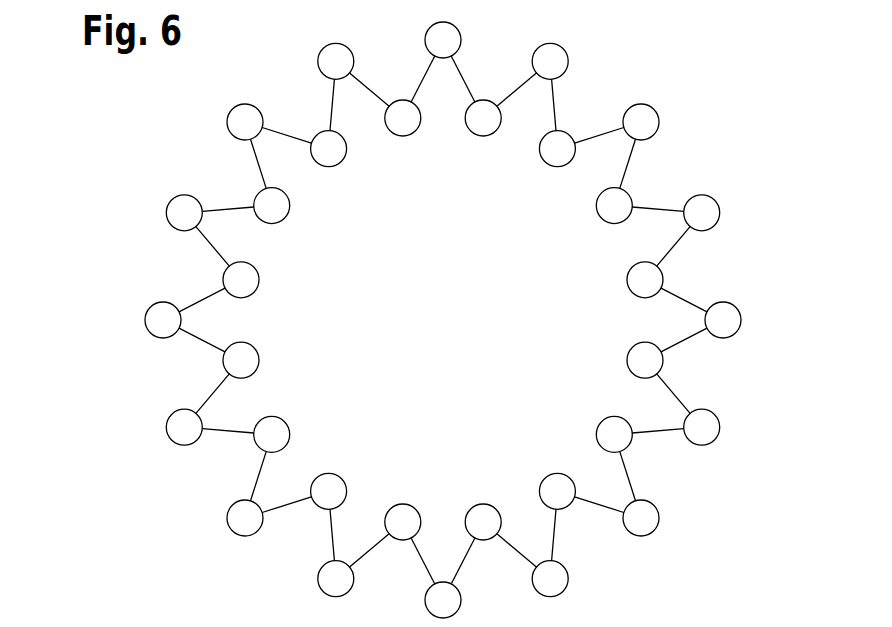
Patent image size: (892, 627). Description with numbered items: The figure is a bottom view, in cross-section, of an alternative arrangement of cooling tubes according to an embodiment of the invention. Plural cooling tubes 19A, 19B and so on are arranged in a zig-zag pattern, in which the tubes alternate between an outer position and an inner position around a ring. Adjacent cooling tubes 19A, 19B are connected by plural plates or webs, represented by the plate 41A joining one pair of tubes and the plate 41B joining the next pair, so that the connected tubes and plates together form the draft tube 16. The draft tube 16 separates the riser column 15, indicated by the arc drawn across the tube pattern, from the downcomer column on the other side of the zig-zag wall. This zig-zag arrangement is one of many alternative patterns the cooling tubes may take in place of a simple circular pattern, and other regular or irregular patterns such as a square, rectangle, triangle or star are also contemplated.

The riser column 15 is at (395, 232).
The draft tube 16 is at (125, 250).
The cooling tube 19A is at (645, 118).
The cooling tube 19B is at (558, 147).
The plate 41A is at (633, 152).
The plate 41B is at (662, 205).